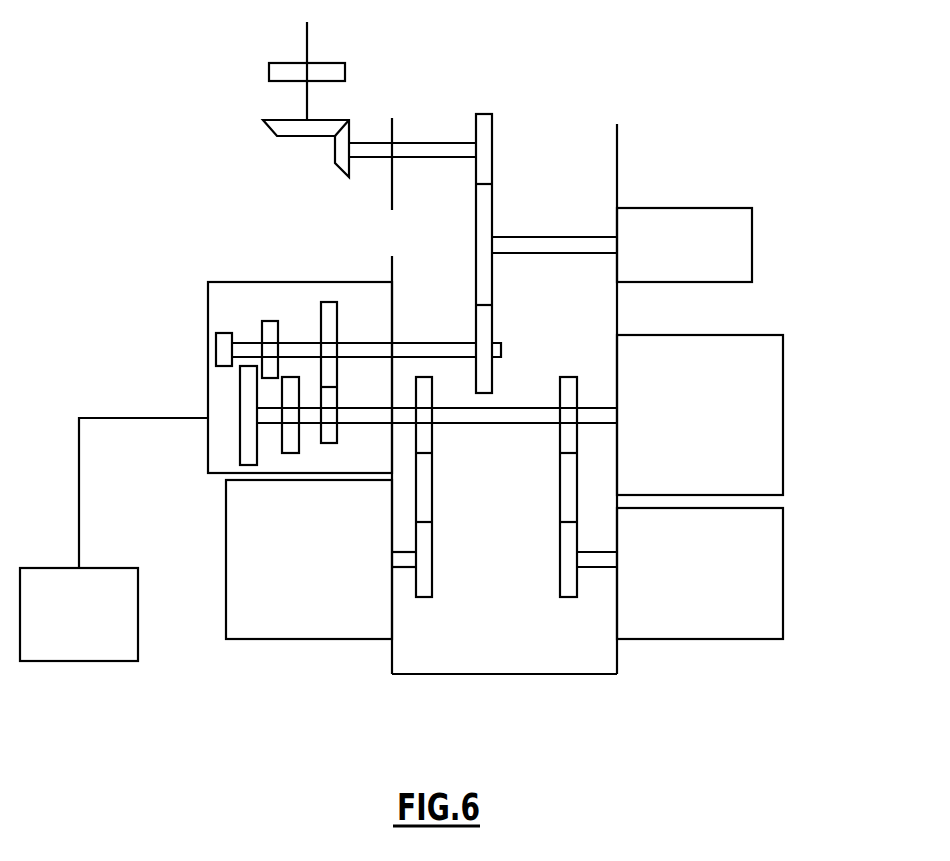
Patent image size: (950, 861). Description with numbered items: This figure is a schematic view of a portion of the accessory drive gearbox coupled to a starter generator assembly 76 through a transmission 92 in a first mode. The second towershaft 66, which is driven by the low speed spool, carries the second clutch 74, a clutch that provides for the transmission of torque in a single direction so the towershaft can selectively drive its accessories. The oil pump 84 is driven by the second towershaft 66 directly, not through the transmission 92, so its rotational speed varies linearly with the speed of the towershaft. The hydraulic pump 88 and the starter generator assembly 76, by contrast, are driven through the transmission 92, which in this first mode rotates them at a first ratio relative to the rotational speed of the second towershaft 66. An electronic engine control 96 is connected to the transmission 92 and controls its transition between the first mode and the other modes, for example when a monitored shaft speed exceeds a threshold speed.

The second towershaft 66 is at (306, 32).
The second clutch 74 is at (268, 72).
The oil pump 84 is at (753, 228).
The starter generator assembly 76 is at (810, 470).
The transmission 92 is at (207, 450).
The hydraulic pump 88 is at (308, 640).
The electronic engine control (EEC) 96 is at (63, 643).